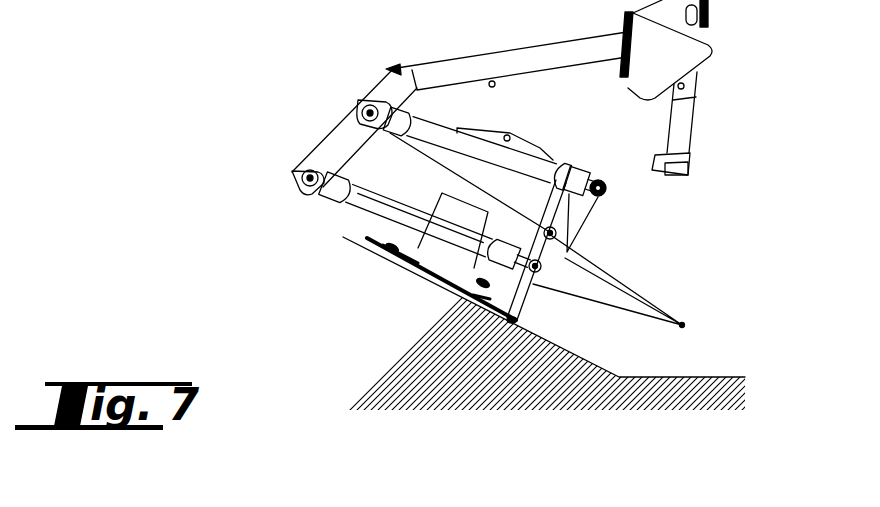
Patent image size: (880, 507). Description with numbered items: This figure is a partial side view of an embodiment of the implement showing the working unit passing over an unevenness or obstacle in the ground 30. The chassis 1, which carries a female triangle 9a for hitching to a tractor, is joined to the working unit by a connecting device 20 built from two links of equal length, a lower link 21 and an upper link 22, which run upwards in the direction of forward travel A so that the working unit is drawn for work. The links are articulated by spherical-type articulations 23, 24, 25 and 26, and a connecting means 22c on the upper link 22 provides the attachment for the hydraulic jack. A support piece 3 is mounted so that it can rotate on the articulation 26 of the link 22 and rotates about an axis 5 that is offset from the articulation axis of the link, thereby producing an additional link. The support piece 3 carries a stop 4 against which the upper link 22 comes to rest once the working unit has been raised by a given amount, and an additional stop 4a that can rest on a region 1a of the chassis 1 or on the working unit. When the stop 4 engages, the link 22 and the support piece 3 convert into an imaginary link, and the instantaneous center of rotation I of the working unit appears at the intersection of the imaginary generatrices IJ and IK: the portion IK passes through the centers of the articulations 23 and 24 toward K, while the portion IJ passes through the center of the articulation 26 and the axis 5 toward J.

The chassis 1 is at (512, 57).
The region of the chassis 1a is at (558, 262).
The support piece 3 is at (575, 245).
The stop 4 is at (572, 225).
The additional stop 4a is at (560, 248).
The axis 5 is at (550, 226).
The female triangle 9a is at (703, 137).
The connecting device 20 is at (575, 156).
The lower link 21 is at (367, 195).
The upper link 22 is at (435, 128).
The connecting means 22c is at (514, 131).
The articulation 23 is at (533, 280).
The articulation 24 is at (307, 193).
The articulation 25 is at (358, 116).
The articulation 26 is at (606, 197).
The ground 30 is at (605, 370).
The direction of forward travel A is at (242, 163).
The imaginary portion IJ endpoint J is at (358, 101).
The imaginary portion IK endpoint K is at (291, 175).
The instantaneous center of rotation I is at (682, 325).